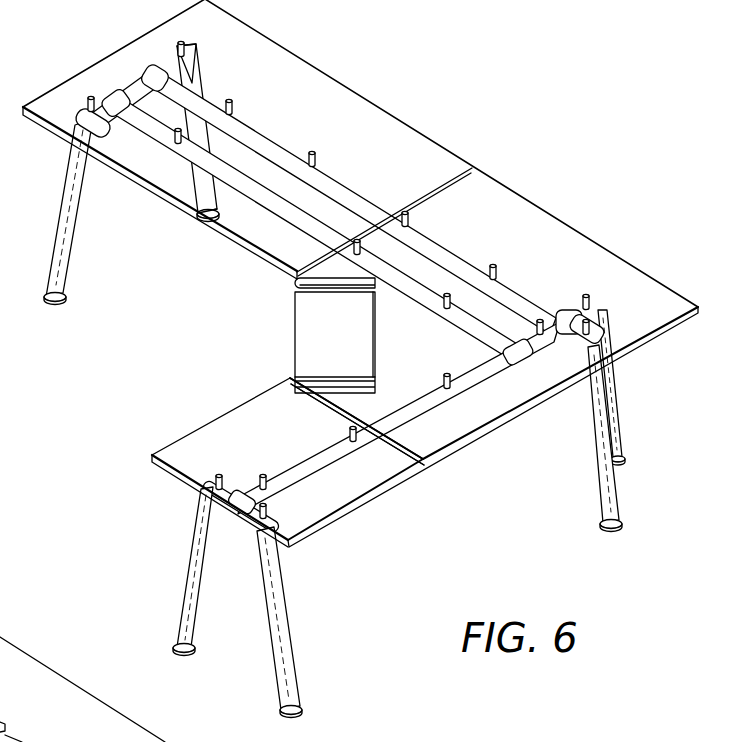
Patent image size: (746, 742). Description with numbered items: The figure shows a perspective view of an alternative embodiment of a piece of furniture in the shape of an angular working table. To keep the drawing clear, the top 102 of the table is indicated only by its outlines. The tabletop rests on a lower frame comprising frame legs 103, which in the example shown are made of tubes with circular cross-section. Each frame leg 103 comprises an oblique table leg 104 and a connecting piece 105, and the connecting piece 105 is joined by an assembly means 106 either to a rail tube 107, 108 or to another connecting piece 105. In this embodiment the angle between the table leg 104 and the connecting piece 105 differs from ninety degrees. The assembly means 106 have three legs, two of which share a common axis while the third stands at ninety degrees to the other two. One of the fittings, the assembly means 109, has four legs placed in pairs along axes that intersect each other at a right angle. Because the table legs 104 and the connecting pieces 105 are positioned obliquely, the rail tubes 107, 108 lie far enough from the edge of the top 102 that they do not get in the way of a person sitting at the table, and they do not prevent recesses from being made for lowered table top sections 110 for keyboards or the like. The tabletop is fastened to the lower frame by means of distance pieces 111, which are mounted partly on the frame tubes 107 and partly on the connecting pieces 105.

The top 102 is at (360, 130).
The frame legs 103 is at (287, 640).
The oblique table leg 104 is at (68, 258).
The connecting piece 105 is at (103, 120).
The assembly means 106 is at (110, 97).
The rail tube 107 is at (245, 128).
The rail tube 108 is at (138, 82).
The assembly means 109 is at (560, 310).
The lowered table top section 110 is at (318, 323).
The distance pieces 111 is at (248, 198).